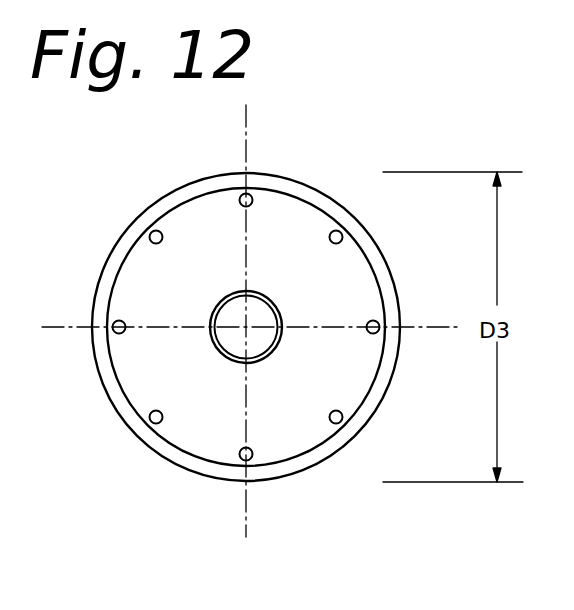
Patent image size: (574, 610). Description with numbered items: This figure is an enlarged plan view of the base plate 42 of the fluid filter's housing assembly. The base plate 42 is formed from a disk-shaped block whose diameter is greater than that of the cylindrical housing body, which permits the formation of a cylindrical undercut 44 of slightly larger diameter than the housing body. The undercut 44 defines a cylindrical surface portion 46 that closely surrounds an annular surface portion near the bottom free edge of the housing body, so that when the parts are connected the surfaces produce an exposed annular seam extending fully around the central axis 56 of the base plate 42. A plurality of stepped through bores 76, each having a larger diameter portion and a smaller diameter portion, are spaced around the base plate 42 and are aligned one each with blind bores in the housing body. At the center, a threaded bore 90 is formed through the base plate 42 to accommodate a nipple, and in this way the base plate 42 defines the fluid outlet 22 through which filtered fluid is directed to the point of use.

The fluid outlet 22 is at (224, 348).
The base plate 42 is at (381, 400).
The cylindrical undercut 44 is at (337, 282).
The cylindrical surface portion 46 is at (298, 209).
The central axis 56 is at (246, 327).
The stepped through bores 76 is at (244, 207).
The bore 90 is at (252, 302).